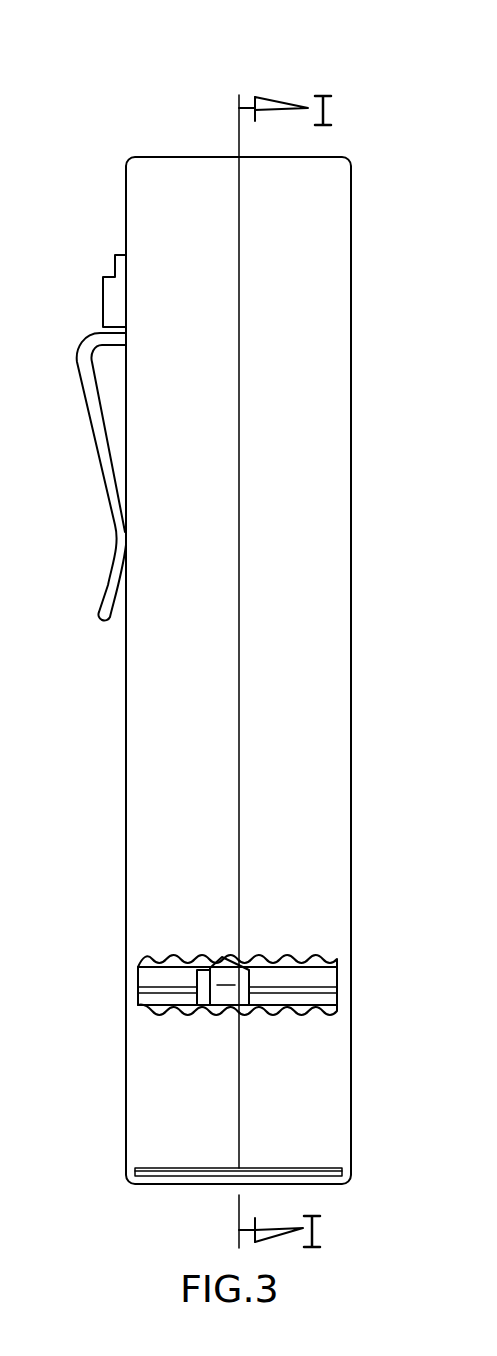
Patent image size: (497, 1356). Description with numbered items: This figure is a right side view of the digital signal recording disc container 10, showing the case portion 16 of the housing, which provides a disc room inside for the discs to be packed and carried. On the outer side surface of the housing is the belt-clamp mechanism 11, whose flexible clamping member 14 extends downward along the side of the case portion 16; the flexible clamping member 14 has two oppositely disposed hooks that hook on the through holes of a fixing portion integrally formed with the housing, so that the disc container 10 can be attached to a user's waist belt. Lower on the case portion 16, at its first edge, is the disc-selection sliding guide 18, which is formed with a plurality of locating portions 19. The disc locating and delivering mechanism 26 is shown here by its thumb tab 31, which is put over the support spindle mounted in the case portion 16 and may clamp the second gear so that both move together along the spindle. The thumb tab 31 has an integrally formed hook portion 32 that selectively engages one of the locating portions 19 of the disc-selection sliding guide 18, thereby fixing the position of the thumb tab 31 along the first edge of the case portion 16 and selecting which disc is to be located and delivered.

The digital signal recording disc container 10 is at (265, 79).
The belt-clamp mechanism 11 is at (62, 285).
The flexible clamping member 14 is at (111, 514).
The case portion 16 is at (138, 785).
The disc-selection sliding guide 18 is at (327, 977).
The locating portions 19 is at (296, 961).
The disc locating and delivering mechanism 26 is at (285, 865).
The thumb tab 31 is at (222, 997).
The hook portion 32 is at (222, 958).